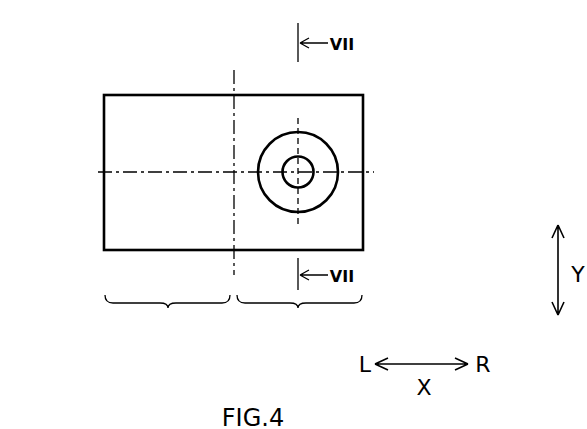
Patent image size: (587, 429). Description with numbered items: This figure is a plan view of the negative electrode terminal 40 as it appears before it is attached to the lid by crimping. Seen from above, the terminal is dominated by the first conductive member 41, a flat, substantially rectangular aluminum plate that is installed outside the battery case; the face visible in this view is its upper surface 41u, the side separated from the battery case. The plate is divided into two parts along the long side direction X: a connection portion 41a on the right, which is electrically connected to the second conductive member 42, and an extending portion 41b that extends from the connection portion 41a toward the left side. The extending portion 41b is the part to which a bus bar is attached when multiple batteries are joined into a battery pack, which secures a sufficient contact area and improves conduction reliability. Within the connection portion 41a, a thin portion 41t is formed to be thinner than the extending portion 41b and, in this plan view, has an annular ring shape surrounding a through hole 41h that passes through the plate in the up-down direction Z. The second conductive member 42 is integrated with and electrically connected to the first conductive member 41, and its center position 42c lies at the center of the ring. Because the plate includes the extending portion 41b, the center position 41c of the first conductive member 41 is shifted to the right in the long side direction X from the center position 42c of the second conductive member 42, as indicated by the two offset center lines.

The negative electrode terminal 40 is at (362, 69).
The first conductive member 41 is at (127, 82).
The upper surface 41u is at (124, 121).
The center position 41c is at (233, 172).
The thin portion 41t is at (325, 152).
The through hole 41h is at (313, 172).
The second conductive member 42 is at (307, 188).
The center position 42c is at (298, 172).
The connection portion 41a is at (299, 318).
The extending portion 41b is at (167, 318).